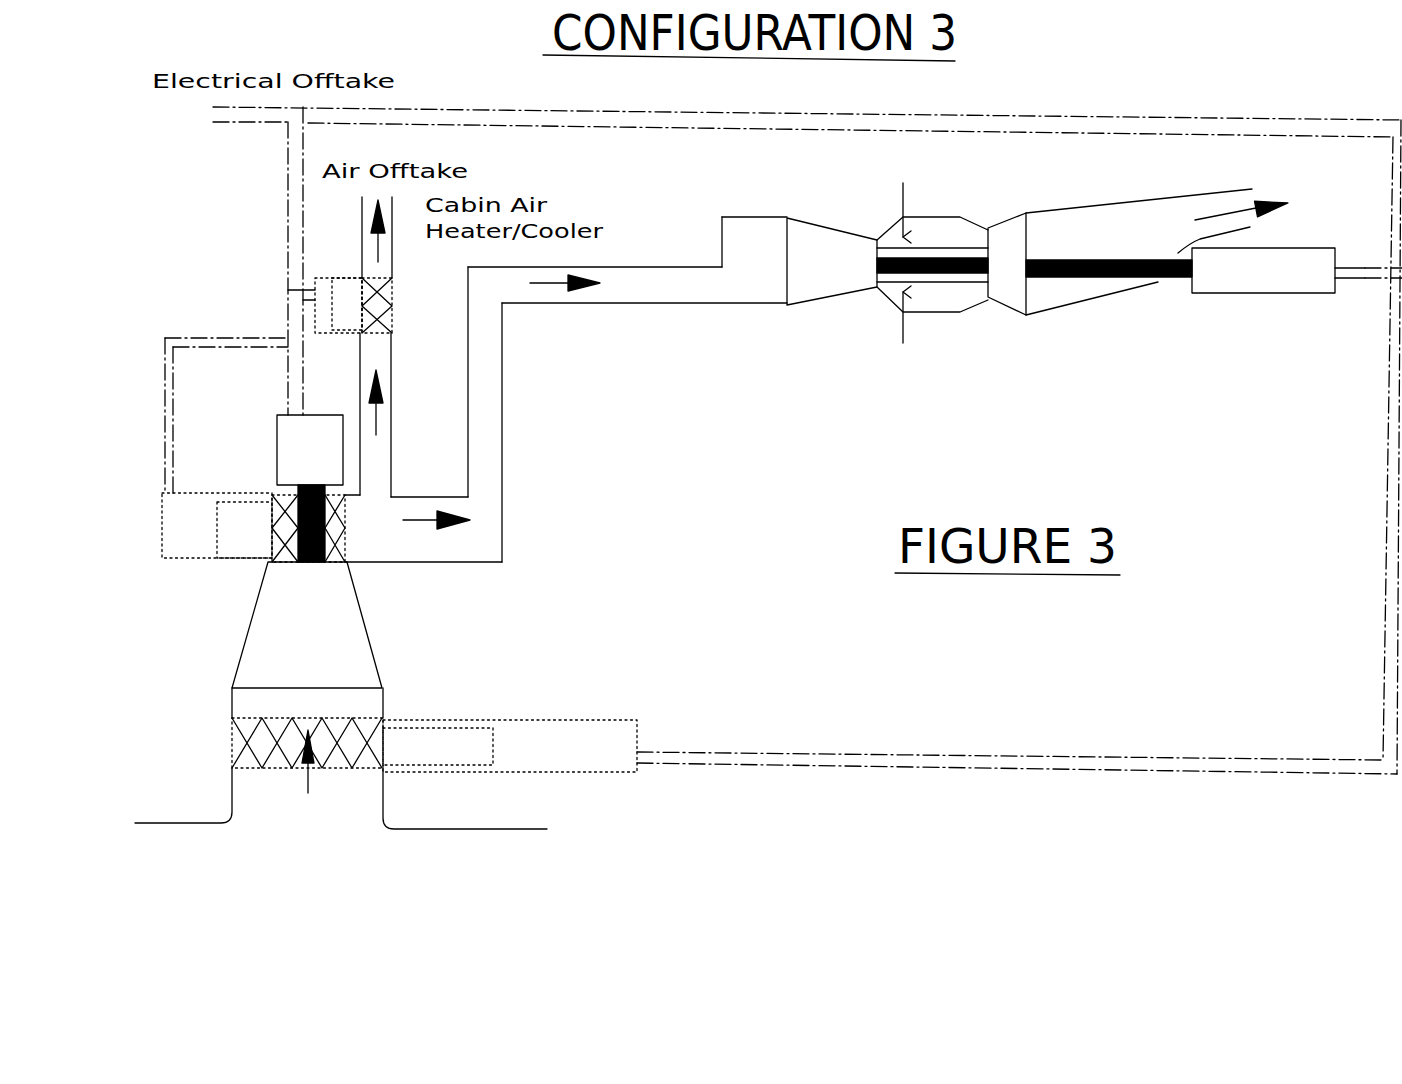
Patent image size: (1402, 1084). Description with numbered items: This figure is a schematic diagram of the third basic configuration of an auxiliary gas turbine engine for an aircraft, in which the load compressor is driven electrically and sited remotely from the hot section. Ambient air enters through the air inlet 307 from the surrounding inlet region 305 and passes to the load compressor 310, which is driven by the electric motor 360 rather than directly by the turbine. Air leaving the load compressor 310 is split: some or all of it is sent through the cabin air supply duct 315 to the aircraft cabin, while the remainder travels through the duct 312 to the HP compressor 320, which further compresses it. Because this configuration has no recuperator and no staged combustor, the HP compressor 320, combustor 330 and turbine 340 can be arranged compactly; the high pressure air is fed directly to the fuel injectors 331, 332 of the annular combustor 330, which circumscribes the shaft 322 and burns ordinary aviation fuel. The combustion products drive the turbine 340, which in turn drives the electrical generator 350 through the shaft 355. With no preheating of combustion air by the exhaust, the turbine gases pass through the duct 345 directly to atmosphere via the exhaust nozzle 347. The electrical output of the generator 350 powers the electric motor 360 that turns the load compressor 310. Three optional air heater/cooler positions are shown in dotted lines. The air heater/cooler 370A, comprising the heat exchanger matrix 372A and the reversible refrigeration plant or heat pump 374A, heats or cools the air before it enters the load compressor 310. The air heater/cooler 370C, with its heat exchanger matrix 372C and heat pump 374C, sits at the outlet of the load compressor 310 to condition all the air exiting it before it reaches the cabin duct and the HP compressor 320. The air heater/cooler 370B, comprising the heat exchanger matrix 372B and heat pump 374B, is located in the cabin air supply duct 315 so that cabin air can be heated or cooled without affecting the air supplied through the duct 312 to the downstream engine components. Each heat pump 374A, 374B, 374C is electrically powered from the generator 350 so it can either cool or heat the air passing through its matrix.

The air inlet 305 is at (467, 833).
The air inlet 307 is at (382, 832).
The load compressor 310 is at (322, 611).
The duct 312 is at (515, 430).
The cabin air supply duct 315 is at (395, 428).
The HP compressor 320 is at (780, 350).
The shaft 322 is at (932, 255).
The combustor 330 is at (888, 220).
The fuel injector 331 is at (922, 205).
The fuel injector 332 is at (907, 335).
The turbine 340 is at (985, 325).
The duct 345 is at (1073, 203).
The exhaust nozzle 347 is at (1197, 192).
The electrical generator 350 is at (1277, 297).
The shaft 355 is at (1097, 282).
The electric motor 360 is at (330, 480).
The air heater/cooler 370A is at (441, 719).
The air heater/cooler 370B is at (392, 299).
The air heater/cooler 370C is at (241, 565).
The heat exchanger matrix 372A is at (232, 742).
The heat exchanger matrix 372B is at (397, 327).
The heat exchanger matrix 372C is at (277, 493).
The reversible refrigeration plant or heat pump 374A is at (510, 746).
The reversible refrigeration plant or heat pump 374B is at (325, 280).
The reversible refrigeration plant or heat pump 374C is at (222, 565).